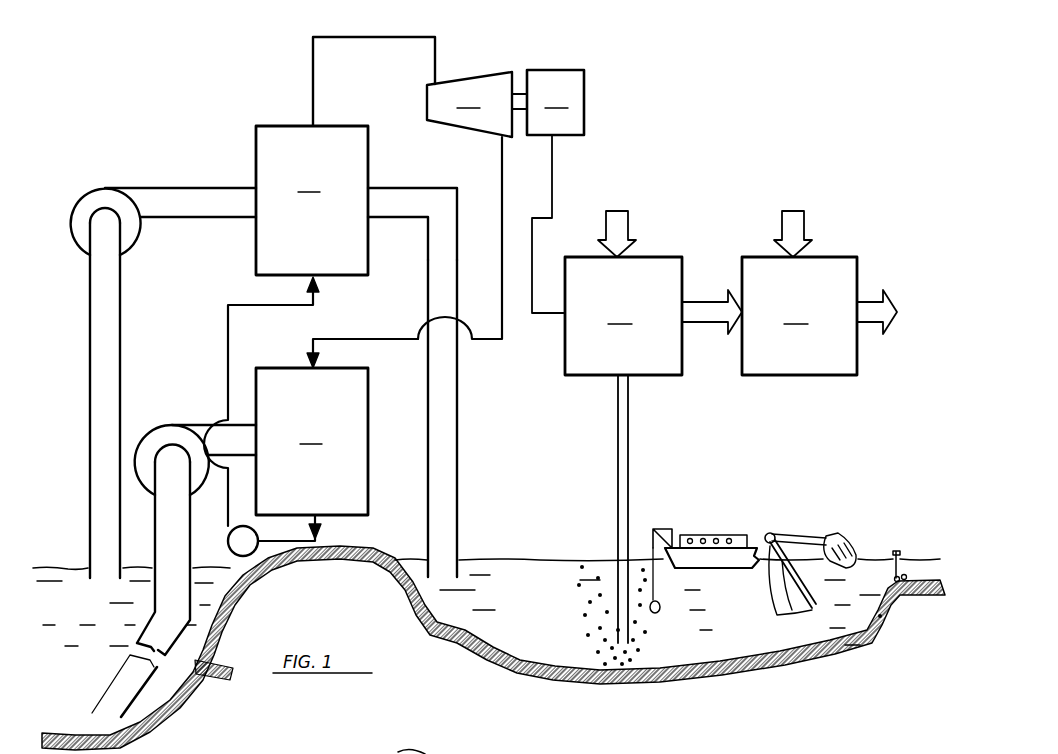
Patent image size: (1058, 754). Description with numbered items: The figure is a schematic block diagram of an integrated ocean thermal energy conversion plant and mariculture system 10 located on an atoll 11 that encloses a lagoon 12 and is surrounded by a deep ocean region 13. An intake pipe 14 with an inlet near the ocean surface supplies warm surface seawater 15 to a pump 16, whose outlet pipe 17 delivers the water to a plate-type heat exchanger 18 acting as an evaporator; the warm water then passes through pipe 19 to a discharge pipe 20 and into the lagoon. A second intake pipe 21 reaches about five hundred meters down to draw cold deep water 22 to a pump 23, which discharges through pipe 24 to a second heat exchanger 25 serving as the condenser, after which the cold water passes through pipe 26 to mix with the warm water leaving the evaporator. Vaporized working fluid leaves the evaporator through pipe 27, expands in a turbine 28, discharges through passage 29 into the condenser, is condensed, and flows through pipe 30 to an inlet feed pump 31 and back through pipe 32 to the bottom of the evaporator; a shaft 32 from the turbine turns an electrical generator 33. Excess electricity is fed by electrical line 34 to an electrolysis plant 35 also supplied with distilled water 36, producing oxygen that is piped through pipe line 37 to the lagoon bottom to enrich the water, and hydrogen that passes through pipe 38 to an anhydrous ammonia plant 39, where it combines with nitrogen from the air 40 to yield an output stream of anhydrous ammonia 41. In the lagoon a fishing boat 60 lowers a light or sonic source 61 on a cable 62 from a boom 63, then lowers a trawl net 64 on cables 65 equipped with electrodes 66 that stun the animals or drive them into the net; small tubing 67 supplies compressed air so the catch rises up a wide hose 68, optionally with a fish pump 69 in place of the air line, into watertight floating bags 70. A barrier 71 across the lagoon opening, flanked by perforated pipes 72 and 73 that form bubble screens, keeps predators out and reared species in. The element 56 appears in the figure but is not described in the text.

The system 10 is at (652, 122).
The atoll 11 is at (383, 548).
The lagoon 12 is at (567, 552).
The deep ocean region 13 is at (60, 556).
The intake pipe 14 is at (92, 402).
The warm surface seawater 15 is at (105, 571).
The pump 16 is at (92, 190).
The pipe 17 is at (222, 190).
The heat exchanger 18 is at (312, 200).
The pipe 19 is at (432, 258).
The discharge pipe 20 is at (460, 405).
The intake pipe 21 is at (160, 543).
The cold deep water 22 is at (106, 710).
The pump 23 is at (170, 428).
The pipe 24 is at (237, 430).
The heat exchanger 25 is at (312, 441).
The pipe 26 is at (415, 418).
The pipe 27 is at (313, 70).
The turbine 28 is at (469, 104).
The passage 29 is at (498, 340).
The pipe 30 is at (325, 530).
The inlet feed pump 31 is at (232, 545).
The pipe / shaft 32 is at (520, 94).
The electrical generator 33 is at (555, 102).
The electrical line 34 is at (552, 170).
The electrolysis plant 35 is at (623, 316).
The distilled water 36 is at (630, 226).
The pipe line 37 is at (630, 447).
The pipe 38 is at (707, 305).
The anhydrous ammonia plant 39 is at (799, 316).
The air 40 is at (800, 222).
The anhydrous ammonia 41 is at (870, 308).
The element 56 is at (432, 752).
The fishing boat 60 is at (712, 552).
The light or sonic source 61 is at (660, 610).
The cable 62 is at (655, 575).
The boom 63 is at (658, 528).
The trawl net 64 is at (795, 620).
The cables 65 is at (775, 572).
The electrodes 66 is at (778, 622).
The small tubing 67 is at (775, 598).
The wide hose 68 is at (810, 578).
The fish pump 69 is at (770, 533).
The floating bags 70 is at (824, 535).
The barrier 71 is at (900, 556).
The perforated pipe 72 is at (888, 556).
The perforated pipe 73 is at (910, 578).